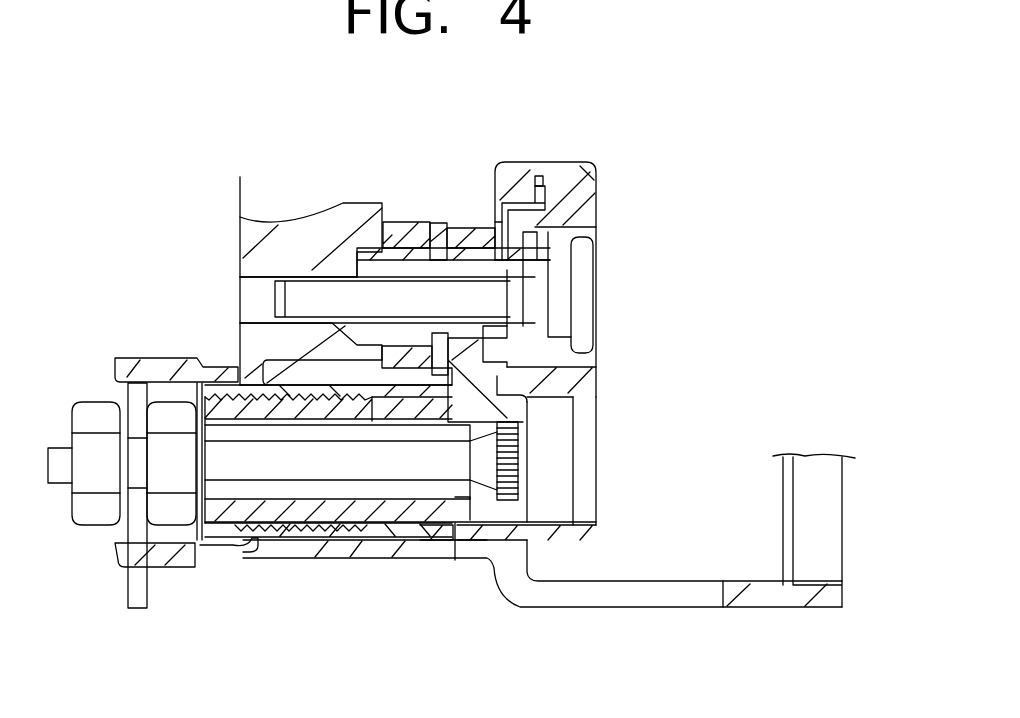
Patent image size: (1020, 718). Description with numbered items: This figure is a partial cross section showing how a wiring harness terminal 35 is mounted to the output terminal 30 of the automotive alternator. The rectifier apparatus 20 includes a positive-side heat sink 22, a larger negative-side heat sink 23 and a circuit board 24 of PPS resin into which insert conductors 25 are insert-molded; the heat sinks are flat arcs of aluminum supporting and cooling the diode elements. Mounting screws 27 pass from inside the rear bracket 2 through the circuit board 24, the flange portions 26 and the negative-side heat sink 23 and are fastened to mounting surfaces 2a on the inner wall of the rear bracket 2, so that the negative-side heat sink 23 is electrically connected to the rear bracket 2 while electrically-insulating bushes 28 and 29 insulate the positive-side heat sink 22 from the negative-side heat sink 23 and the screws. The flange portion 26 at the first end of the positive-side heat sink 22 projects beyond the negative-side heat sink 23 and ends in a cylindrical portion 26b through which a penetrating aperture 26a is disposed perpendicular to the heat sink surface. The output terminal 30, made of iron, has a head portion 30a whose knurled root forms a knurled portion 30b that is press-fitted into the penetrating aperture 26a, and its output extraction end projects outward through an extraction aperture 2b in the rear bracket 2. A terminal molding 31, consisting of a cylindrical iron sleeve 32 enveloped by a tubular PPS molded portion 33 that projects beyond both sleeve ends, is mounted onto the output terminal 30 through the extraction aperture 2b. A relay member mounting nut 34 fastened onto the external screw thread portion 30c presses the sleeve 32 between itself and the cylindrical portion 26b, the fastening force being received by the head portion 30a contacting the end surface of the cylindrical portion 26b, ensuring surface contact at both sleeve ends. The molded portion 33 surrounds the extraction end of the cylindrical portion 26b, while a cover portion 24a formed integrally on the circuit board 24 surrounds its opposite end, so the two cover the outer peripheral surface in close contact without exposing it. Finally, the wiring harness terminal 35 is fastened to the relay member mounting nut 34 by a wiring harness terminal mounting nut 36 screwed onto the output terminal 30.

The rear bracket 2 is at (771, 620).
The mounting surfaces 2a is at (387, 205).
The extraction aperture 2b is at (253, 560).
The rectifier apparatus 20 is at (603, 170).
The positive-side heat sink 22 is at (475, 225).
The negative-side heat sink 23 is at (403, 218).
The circuit board 24 is at (585, 162).
The cover portion 24a is at (563, 533).
The insert conductors 25 is at (537, 175).
The flange portions 26 is at (513, 517).
The penetrating aperture 26a is at (457, 498).
The cylindrical portion 26b is at (440, 510).
The mounting screws 27 is at (583, 286).
The electrically-insulating bush 28 is at (440, 221).
The electrically-insulating bush 29 is at (530, 253).
The output terminal 30 is at (592, 489).
The head portion 30a is at (560, 428).
The knurled portion 30b is at (517, 453).
The external screw thread portion 30c is at (233, 440).
The terminal molding 31 is at (355, 620).
The sleeve 32 is at (295, 560).
The molded portion 33 is at (340, 560).
The relay member mounting nut 34 is at (178, 514).
The wiring harness terminal 35 is at (137, 585).
The wiring harness terminal mounting nut 36 is at (93, 515).